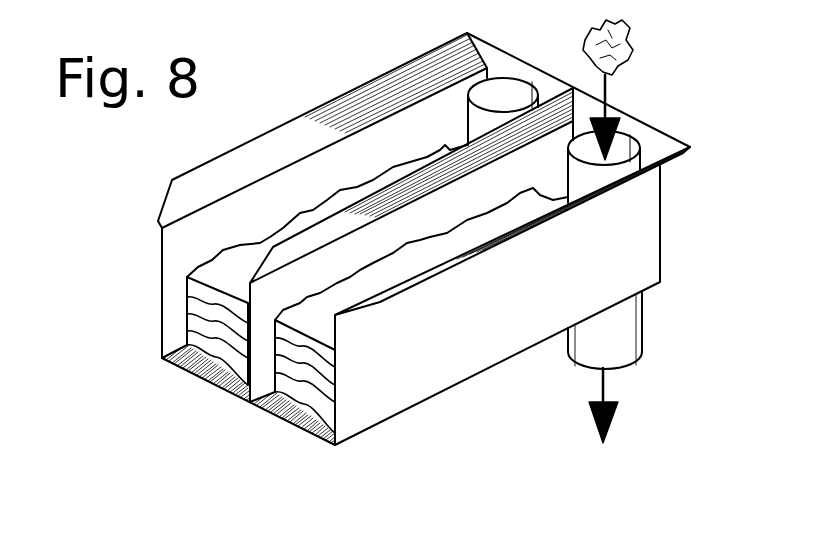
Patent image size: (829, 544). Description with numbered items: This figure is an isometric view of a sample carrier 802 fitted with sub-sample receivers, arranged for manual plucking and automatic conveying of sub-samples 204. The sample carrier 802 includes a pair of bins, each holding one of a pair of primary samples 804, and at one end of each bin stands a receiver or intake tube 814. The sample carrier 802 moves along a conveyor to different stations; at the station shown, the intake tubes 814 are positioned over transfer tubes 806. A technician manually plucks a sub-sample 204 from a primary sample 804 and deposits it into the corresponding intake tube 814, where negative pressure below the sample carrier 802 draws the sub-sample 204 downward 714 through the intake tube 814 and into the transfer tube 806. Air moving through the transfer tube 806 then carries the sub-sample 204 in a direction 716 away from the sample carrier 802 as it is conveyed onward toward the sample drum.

The sample carrier 802 is at (380, 74).
The primary sample 804 is at (185, 297).
The transfer tube 806 is at (643, 317).
The intake tube 814 is at (678, 157).
The sub-sample 204 is at (582, 43).
The downward direction 714 is at (608, 82).
The direction away from the sample carrier 716 is at (608, 388).